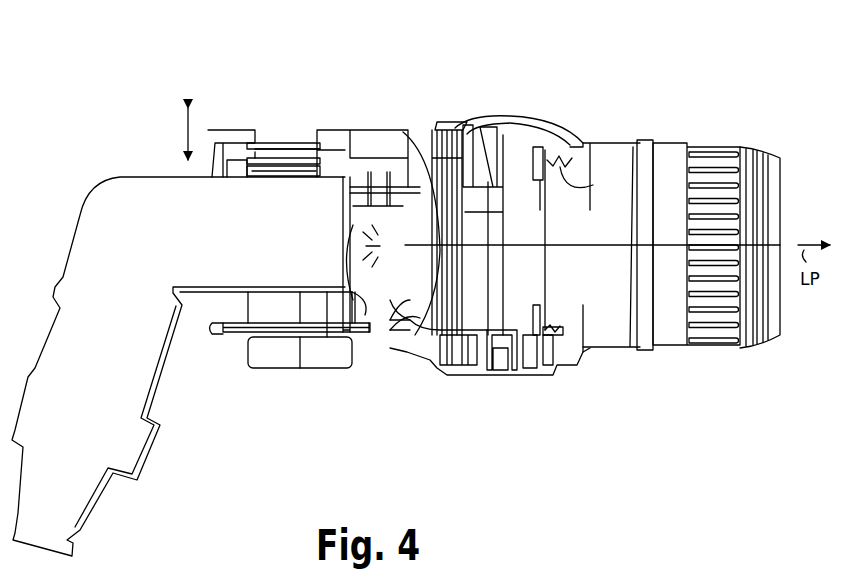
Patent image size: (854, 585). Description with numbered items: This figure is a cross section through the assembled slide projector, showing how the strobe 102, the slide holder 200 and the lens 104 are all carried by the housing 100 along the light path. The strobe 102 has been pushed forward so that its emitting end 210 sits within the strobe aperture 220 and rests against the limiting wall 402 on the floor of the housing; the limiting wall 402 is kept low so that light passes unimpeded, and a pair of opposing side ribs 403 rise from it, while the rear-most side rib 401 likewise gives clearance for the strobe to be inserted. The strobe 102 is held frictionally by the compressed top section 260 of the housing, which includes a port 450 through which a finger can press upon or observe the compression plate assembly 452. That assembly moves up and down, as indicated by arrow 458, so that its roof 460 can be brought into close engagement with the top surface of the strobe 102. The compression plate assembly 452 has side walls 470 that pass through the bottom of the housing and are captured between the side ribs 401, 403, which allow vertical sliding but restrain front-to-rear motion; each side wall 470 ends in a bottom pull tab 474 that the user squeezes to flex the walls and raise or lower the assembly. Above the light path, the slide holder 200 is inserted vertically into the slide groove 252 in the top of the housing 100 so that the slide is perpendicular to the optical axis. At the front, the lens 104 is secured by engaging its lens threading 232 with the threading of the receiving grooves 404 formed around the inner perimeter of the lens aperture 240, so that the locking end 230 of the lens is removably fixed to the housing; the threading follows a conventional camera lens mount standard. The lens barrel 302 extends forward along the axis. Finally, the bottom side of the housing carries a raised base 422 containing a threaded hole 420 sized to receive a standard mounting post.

The housing 100 is at (342, 110).
The strobe 102 is at (166, 241).
The lens 104 is at (613, 241).
The slide holder 200 is at (440, 118).
The emitting end of the strobe 210 is at (335, 226).
The strobe aperture 220 is at (232, 311).
The locking end of the lens 230 is at (560, 217).
The lens threading 232 is at (553, 327).
The lens aperture 240 is at (572, 152).
The slide groove 252 is at (470, 120).
The top section of the housing 260 is at (232, 128).
The lens end 302 is at (770, 338).
The rear-most side rib 401 is at (252, 300).
The limiting wall 402 is at (369, 332).
The side ribs 403 is at (327, 337).
The receiving grooves 404 is at (550, 153).
The threaded hole 420 is at (500, 374).
The raised base 422 is at (453, 374).
The port 450 is at (258, 128).
The compression plate assembly 452 is at (290, 128).
The arrow 458 is at (169, 121).
The roof of the compression plate assembly 460 is at (280, 180).
The side walls 470 is at (295, 370).
The bottom pull tab 474 is at (308, 308).